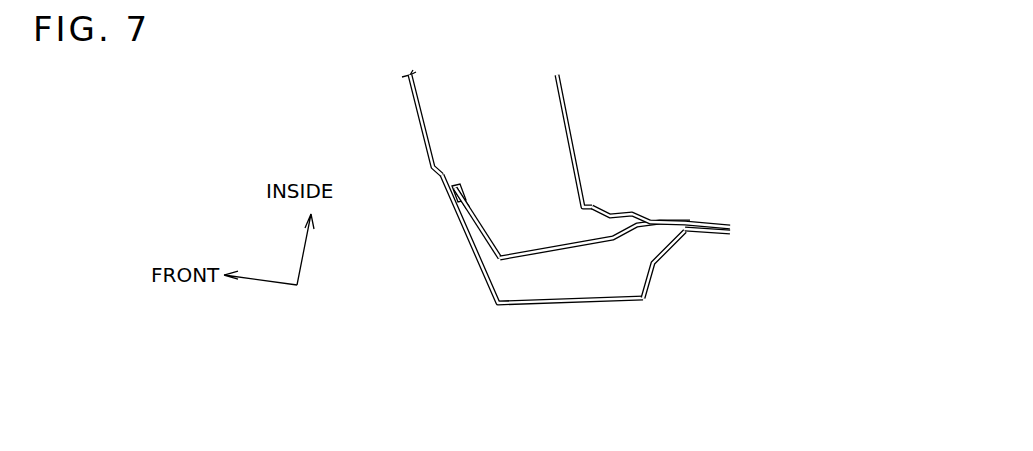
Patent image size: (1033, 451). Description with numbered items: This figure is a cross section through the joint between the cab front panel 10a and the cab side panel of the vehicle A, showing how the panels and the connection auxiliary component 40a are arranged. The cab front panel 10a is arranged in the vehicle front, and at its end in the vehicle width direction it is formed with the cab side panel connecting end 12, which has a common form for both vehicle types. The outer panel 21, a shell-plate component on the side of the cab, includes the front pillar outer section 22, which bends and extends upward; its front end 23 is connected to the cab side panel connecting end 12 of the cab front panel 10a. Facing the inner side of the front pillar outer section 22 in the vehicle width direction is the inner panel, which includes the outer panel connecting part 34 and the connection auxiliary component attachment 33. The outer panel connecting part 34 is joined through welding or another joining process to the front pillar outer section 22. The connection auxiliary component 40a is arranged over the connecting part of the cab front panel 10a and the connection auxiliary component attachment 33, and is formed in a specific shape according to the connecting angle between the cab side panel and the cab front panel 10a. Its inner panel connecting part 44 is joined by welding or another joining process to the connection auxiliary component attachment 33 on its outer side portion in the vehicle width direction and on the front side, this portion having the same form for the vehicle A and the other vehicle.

The cab front panel 10a is at (401, 99).
The cab side panel connecting end 12 is at (456, 197).
The outer panel 21 is at (637, 317).
The front pillar outer section 22 is at (537, 302).
The front end 23 is at (458, 186).
The connection auxiliary component attachment 33 is at (560, 232).
The outer panel connecting part 34 is at (471, 207).
The connection auxiliary component 40a is at (583, 104).
The inner panel connecting part 44 is at (654, 216).
The vehicle A is at (733, 331).